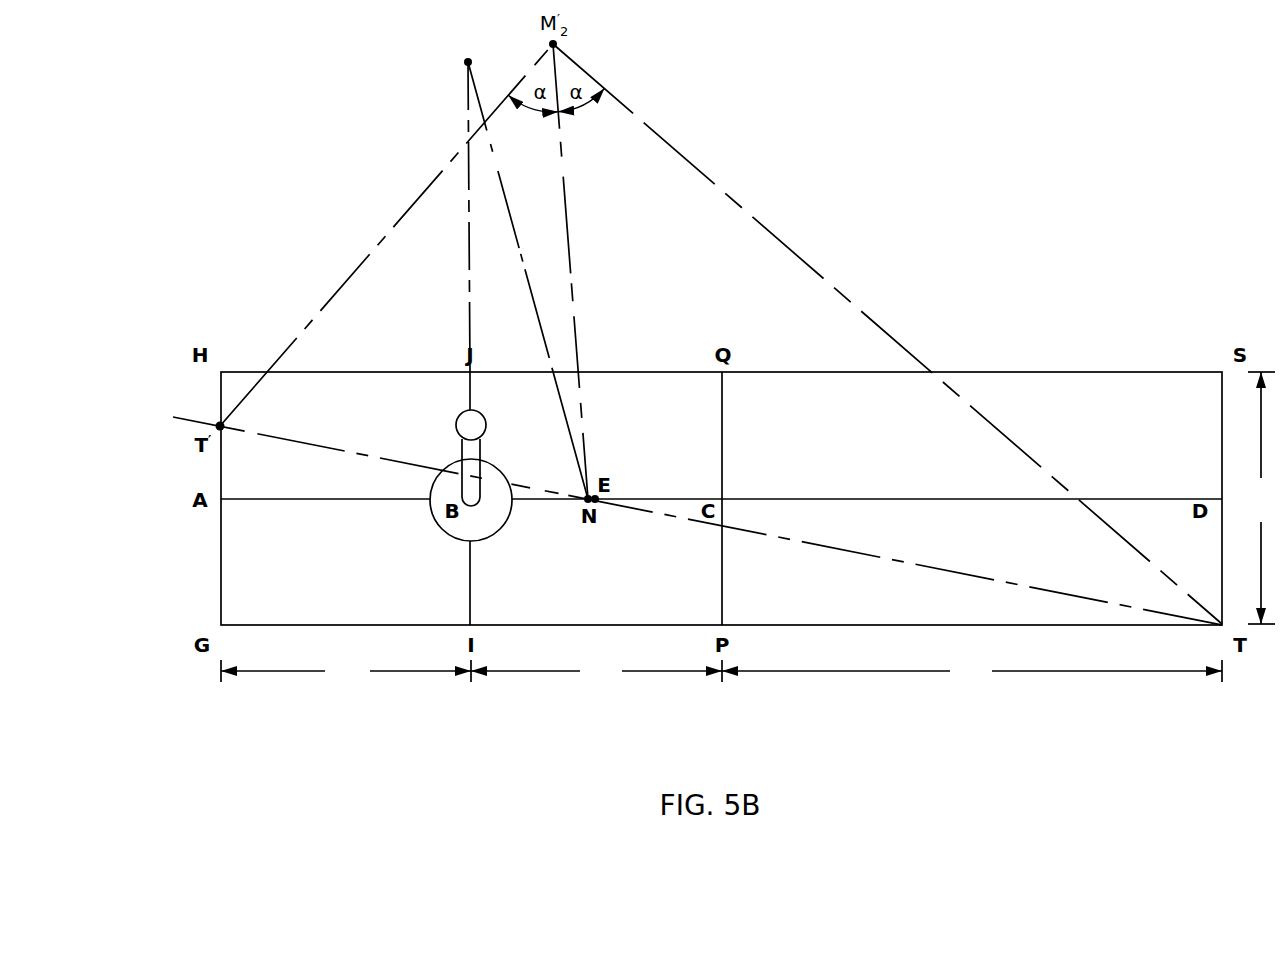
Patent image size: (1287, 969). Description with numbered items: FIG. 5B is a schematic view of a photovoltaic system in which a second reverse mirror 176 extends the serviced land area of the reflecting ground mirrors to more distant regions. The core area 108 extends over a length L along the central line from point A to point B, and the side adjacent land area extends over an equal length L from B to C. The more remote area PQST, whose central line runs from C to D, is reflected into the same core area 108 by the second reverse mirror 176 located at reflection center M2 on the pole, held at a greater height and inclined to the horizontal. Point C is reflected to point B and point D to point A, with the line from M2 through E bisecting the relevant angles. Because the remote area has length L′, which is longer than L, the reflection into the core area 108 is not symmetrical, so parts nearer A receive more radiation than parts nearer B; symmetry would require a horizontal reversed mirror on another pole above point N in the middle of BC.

The core area 108 is at (312, 410).
The second reverse mirror 176 is at (481, 570).
The second reverse mirror reflection center M2 is at (471, 475).
The length of the core area L is at (748, 528).
The length of the remote area L′ is at (972, 672).